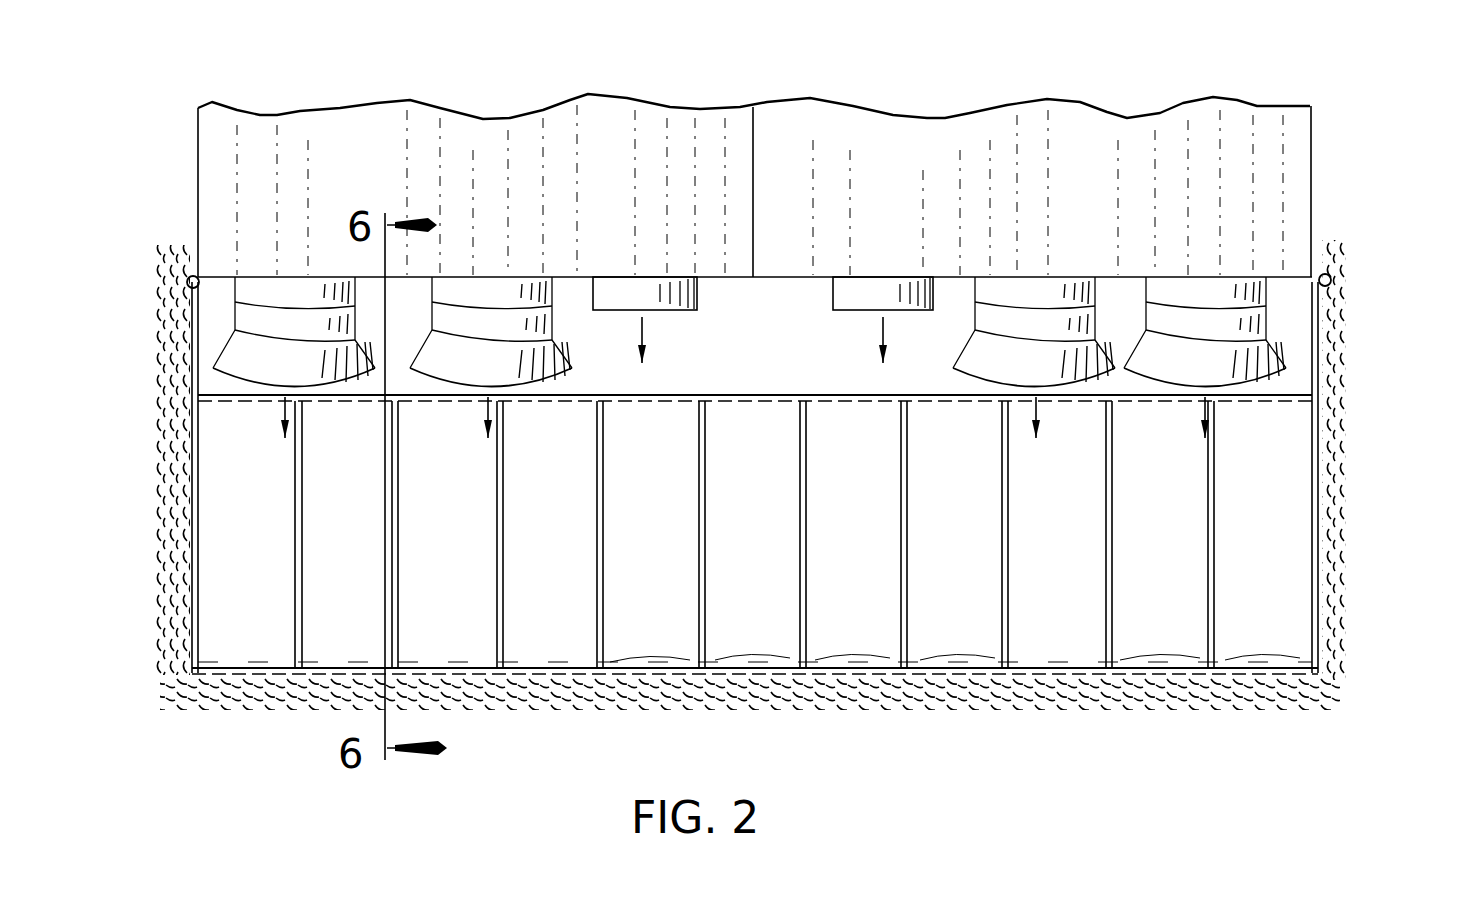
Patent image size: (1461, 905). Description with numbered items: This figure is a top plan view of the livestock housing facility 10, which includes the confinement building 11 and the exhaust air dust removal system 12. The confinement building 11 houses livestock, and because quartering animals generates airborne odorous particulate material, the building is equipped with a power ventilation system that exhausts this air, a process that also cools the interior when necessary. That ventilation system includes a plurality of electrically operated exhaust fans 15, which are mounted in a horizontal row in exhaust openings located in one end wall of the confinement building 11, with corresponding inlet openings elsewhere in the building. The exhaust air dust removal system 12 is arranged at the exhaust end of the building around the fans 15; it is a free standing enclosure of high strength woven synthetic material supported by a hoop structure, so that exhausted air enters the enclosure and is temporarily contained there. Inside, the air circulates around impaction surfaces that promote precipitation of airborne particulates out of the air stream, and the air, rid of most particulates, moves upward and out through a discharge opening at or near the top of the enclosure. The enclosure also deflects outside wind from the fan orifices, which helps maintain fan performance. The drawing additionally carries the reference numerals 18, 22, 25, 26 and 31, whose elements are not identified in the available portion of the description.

The livestock housing facility 10 is at (1348, 320).
The confinement building 11 is at (1308, 120).
The exhaust air dust removal system 12 is at (194, 558).
The exhaust fans 15 is at (506, 290).
The bottom wall 18 is at (1167, 630).
The partitions 22 is at (503, 613).
The perforated plate 25 is at (652, 396).
The hinge 26 is at (187, 283).
The air outlet openings 31 is at (822, 346).